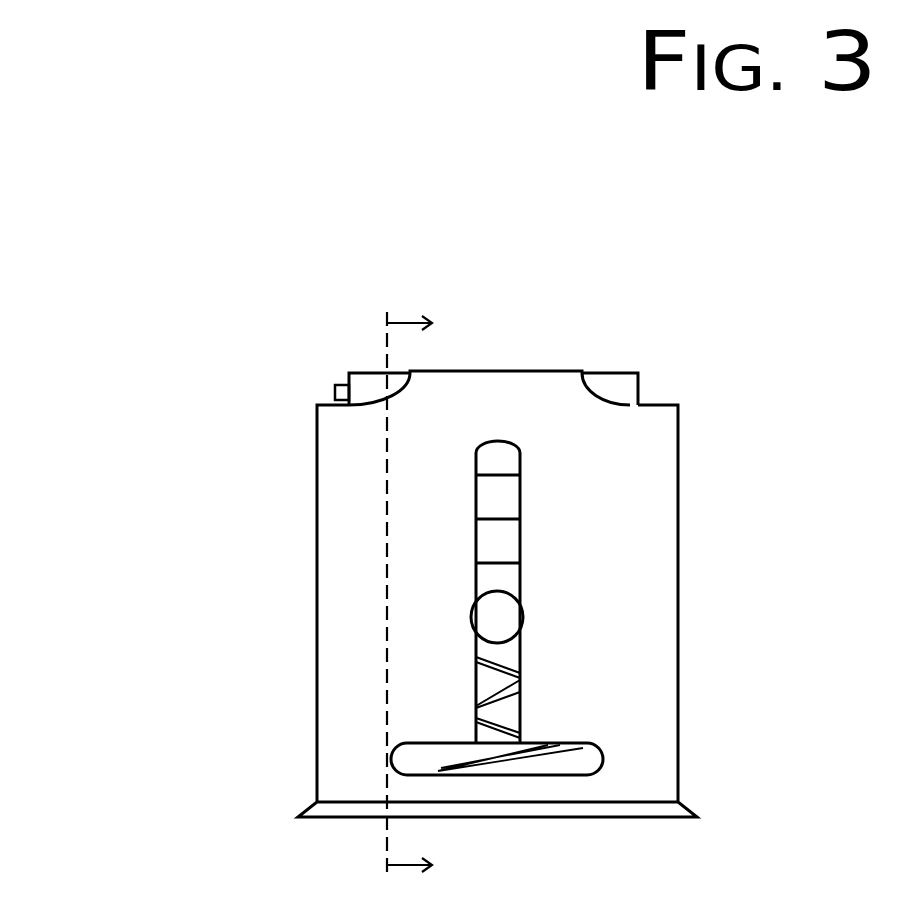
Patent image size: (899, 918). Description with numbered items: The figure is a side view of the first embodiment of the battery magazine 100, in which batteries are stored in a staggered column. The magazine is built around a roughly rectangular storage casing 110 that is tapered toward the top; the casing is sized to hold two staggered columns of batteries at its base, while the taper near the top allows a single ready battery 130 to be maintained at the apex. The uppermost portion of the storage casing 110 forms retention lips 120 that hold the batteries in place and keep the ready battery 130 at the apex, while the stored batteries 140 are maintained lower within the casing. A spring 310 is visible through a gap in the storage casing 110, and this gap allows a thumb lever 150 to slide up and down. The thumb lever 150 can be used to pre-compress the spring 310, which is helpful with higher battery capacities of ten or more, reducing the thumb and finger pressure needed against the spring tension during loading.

The battery magazine 100 is at (145, 344).
The storage casing 110 is at (350, 676).
The retention lips 120 is at (513, 380).
The ready battery 130 is at (372, 382).
The stored batteries 140 is at (493, 549).
The thumb lever 150 is at (497, 620).
The spring 310 is at (590, 747).